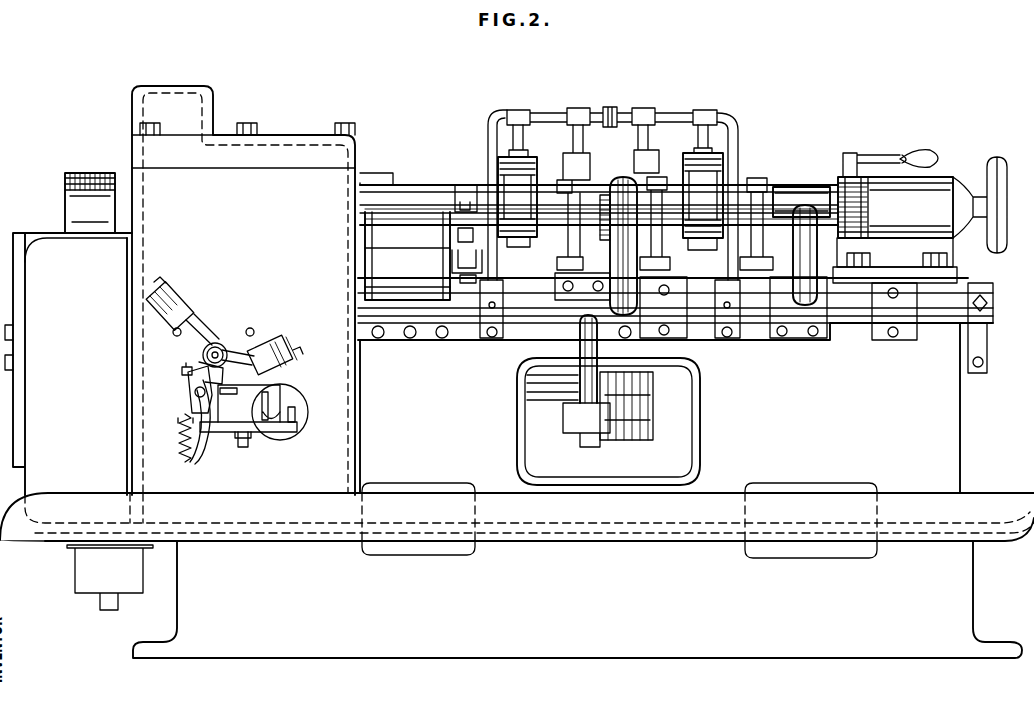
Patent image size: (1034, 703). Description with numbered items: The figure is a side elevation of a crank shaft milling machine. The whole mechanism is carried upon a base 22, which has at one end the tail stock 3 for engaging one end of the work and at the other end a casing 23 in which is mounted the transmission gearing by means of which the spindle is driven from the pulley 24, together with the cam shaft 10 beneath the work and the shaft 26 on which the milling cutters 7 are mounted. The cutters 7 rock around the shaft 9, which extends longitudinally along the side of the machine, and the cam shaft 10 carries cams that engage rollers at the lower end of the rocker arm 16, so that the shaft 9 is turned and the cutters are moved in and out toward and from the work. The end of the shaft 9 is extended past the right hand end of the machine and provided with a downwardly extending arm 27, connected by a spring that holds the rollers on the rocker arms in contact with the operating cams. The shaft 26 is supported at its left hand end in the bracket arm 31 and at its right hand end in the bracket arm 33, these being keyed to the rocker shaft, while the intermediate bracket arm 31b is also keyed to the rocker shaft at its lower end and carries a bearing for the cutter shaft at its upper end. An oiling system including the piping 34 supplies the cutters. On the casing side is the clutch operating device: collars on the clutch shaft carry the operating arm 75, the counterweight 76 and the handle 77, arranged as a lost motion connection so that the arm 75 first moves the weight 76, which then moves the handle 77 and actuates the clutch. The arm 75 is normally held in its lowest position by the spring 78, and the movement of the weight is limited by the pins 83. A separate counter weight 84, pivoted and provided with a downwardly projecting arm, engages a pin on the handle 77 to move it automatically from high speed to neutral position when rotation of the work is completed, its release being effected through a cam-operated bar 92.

The tail stock 3 is at (885, 203).
The milling cutters 7 is at (712, 245).
The shaft 9 is at (700, 318).
The cam shaft 10 is at (537, 420).
The rocker arm 16 is at (590, 355).
The base 22 is at (228, 622).
The casing 23 is at (157, 183).
The pulley 24 is at (68, 199).
The shaft 26 is at (563, 208).
The arm 27 is at (987, 350).
The bracket arm 31 is at (402, 250).
The bracket arm 31b is at (627, 215).
The bracket arm 33 is at (800, 205).
The piping 34 is at (677, 116).
The operating arm 75 is at (198, 358).
The counterweight 76 is at (178, 296).
The handle 77 is at (203, 378).
The spring 78 is at (182, 447).
The pins 83 is at (254, 330).
The counter weight 84 is at (293, 357).
The bar 92 is at (307, 417).